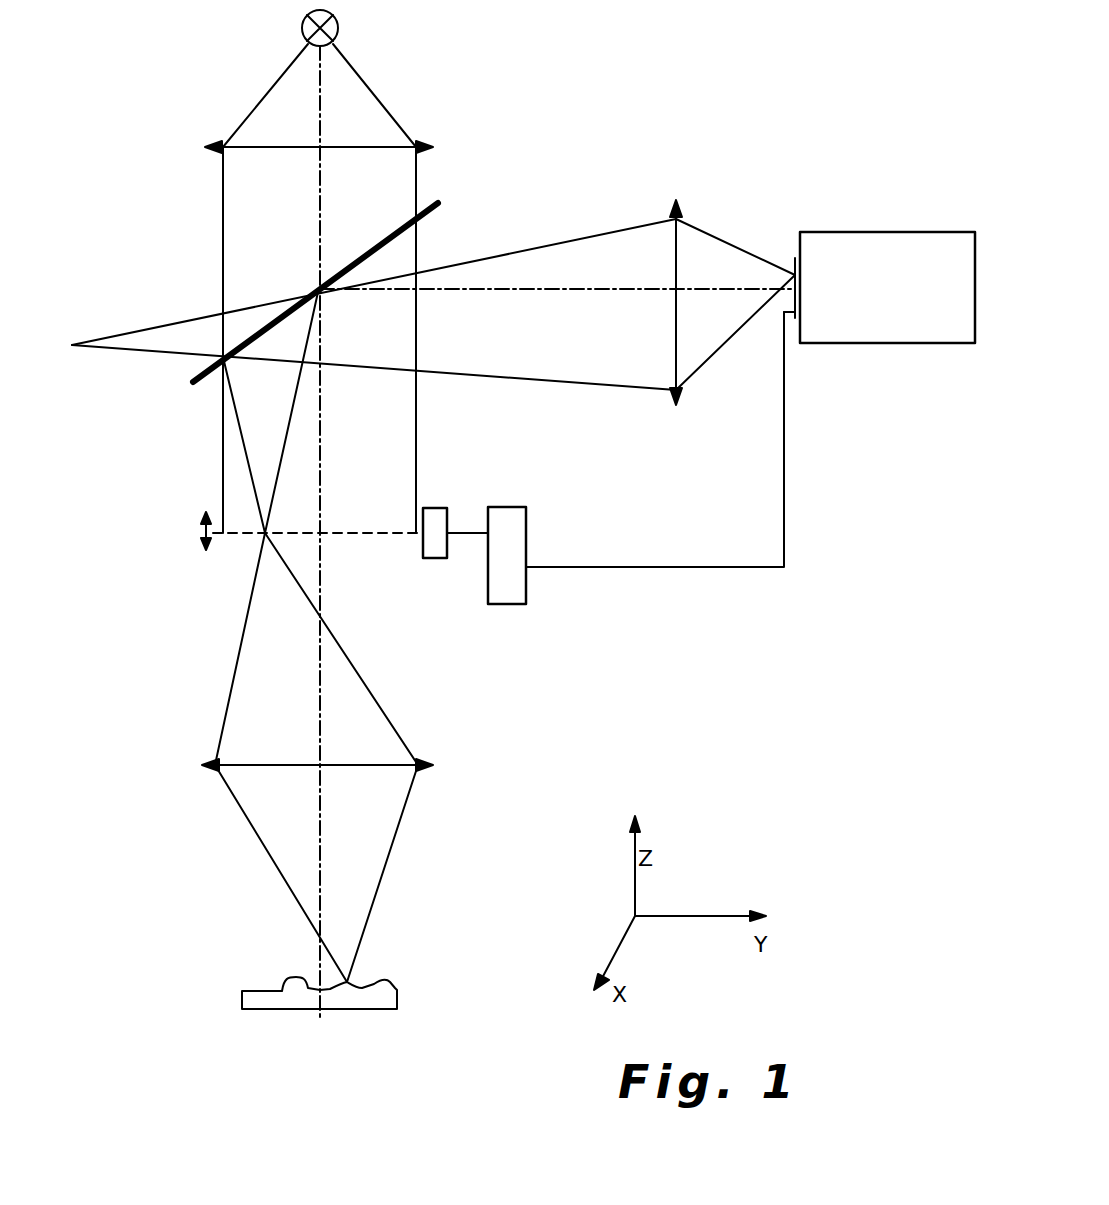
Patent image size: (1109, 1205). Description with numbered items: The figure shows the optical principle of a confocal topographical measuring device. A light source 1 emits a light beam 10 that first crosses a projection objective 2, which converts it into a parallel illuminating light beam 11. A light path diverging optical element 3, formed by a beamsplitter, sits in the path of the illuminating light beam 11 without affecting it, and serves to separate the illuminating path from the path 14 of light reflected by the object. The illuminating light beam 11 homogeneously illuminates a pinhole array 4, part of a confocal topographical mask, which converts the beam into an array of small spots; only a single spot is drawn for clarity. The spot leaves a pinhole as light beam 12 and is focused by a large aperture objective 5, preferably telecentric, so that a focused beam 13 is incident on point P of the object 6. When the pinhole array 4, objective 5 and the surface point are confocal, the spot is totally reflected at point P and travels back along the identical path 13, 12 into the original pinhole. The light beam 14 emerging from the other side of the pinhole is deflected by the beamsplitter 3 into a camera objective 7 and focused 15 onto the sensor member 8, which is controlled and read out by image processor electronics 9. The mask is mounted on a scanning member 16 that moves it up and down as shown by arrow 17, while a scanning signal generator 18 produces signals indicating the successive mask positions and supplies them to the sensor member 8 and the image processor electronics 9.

The light source 1 is at (338, 30).
The projection objective 2 is at (428, 160).
The light path diverging optical element 3 is at (430, 214).
The pinhole array 4 is at (368, 540).
The large aperture objective 5 is at (424, 772).
The object 6 is at (398, 996).
The camera objective 7 is at (682, 212).
The sensor member 8 is at (792, 264).
The image processor electronics 9 is at (887, 287).
The light beam 10 is at (250, 128).
The parallel illuminating light beam 11 is at (224, 294).
The light beam 12 is at (238, 668).
The focused beam 13 is at (276, 880).
The reflected light path 14 is at (280, 438).
The focused light 15 is at (716, 360).
The scanning member 16 is at (432, 516).
The arrow 17 is at (198, 534).
The scanning signal generator 18 is at (510, 552).
The point P is at (350, 982).